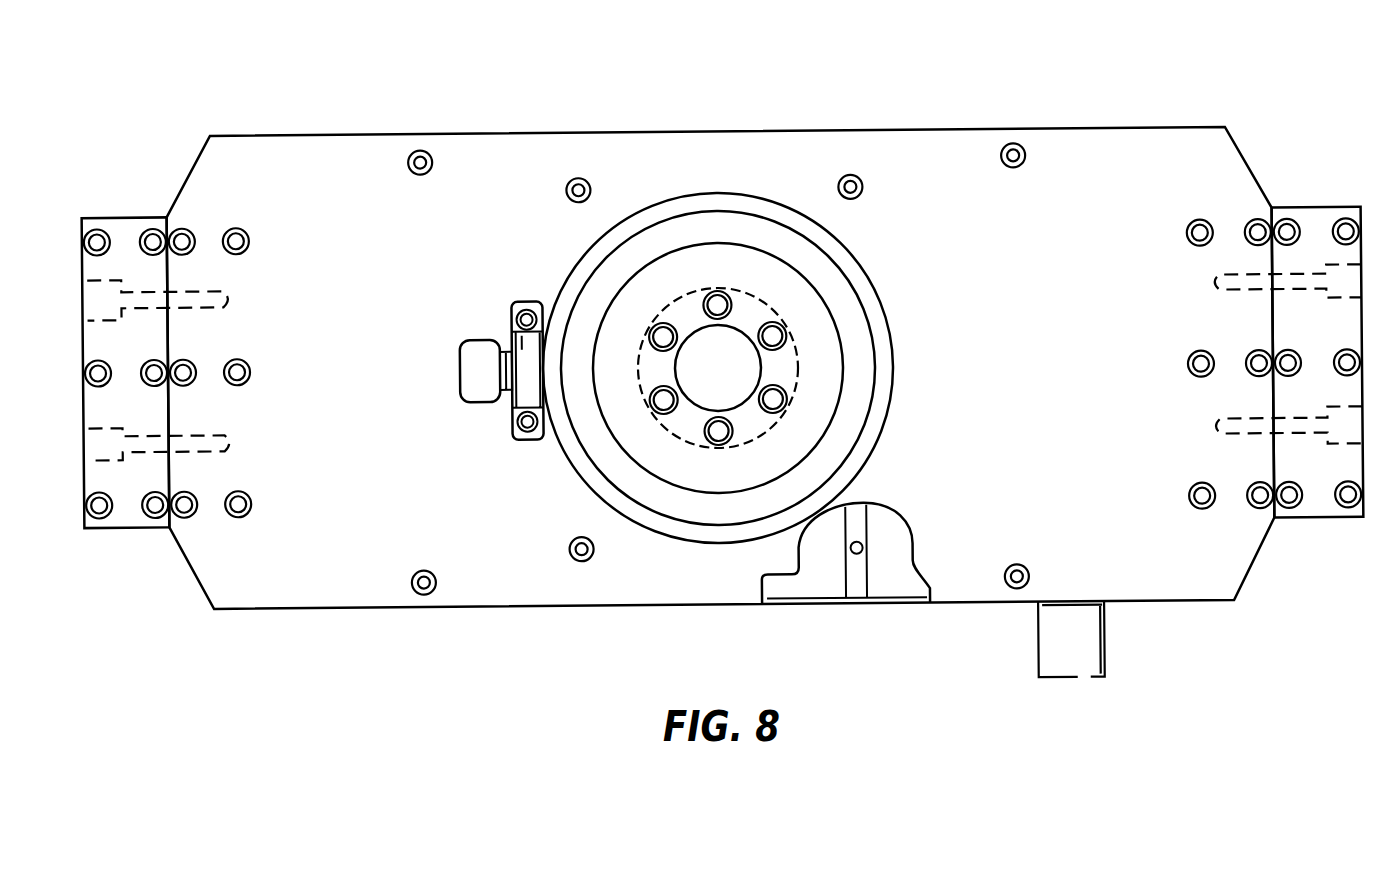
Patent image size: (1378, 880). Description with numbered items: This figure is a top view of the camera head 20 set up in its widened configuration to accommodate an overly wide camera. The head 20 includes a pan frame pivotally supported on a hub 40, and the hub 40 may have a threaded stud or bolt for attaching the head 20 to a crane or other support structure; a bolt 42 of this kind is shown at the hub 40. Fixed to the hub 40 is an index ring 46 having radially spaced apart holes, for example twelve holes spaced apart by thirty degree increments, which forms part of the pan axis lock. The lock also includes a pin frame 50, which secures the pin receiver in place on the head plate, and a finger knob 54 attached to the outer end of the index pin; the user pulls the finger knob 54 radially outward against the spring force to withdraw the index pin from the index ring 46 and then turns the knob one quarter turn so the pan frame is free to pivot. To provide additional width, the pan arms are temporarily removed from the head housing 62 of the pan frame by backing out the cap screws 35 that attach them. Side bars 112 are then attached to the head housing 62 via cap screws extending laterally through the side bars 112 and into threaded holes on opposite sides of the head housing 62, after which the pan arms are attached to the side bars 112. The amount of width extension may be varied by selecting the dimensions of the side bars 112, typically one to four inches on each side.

The camera head 20 is at (707, 129).
The side bars 112 is at (132, 512).
The cap screws 35 is at (233, 295).
The index ring 46 is at (870, 432).
The hub 40 is at (798, 366).
The bolt 42 is at (786, 327).
The pin frame 50 is at (511, 313).
The finger knob 54 is at (480, 350).
The head housing 62 is at (827, 573).